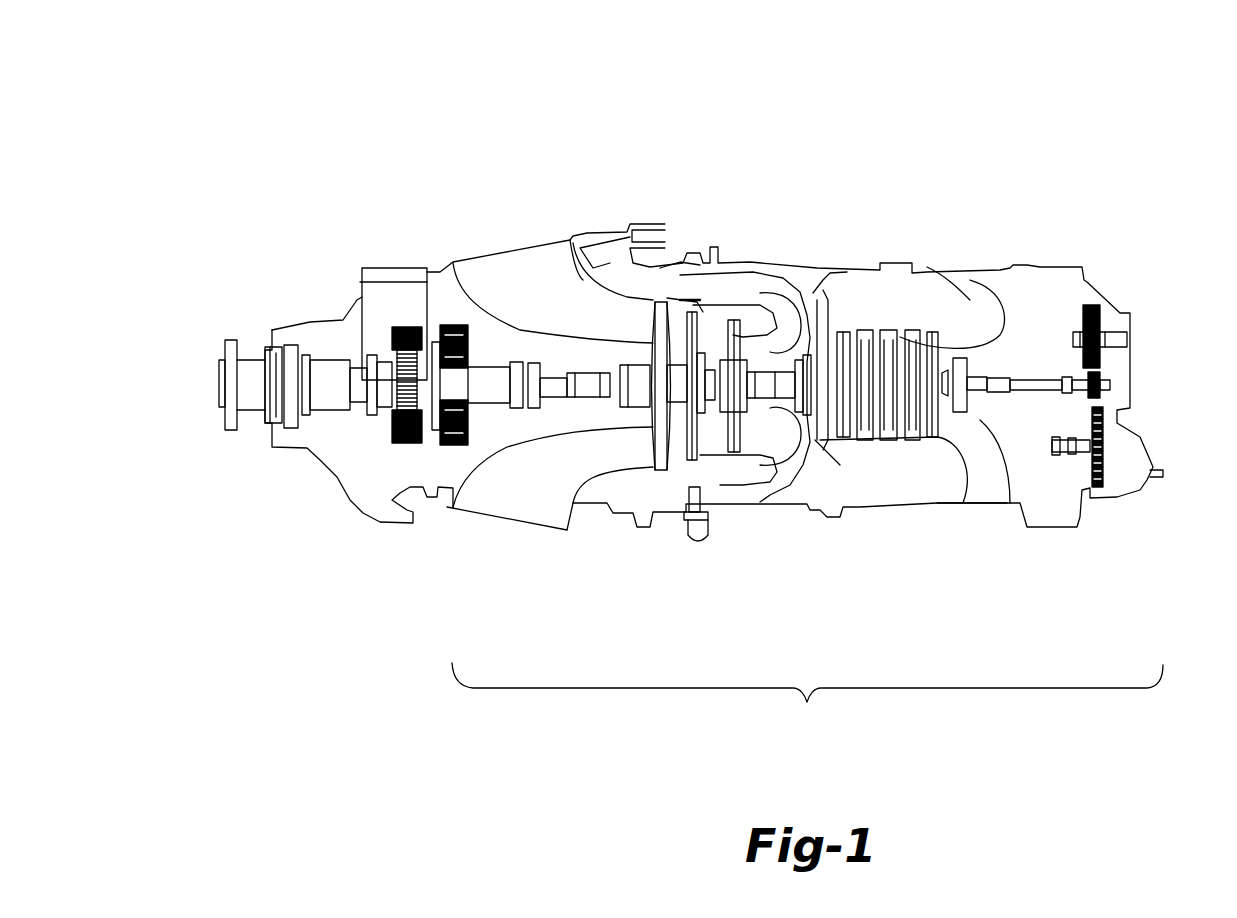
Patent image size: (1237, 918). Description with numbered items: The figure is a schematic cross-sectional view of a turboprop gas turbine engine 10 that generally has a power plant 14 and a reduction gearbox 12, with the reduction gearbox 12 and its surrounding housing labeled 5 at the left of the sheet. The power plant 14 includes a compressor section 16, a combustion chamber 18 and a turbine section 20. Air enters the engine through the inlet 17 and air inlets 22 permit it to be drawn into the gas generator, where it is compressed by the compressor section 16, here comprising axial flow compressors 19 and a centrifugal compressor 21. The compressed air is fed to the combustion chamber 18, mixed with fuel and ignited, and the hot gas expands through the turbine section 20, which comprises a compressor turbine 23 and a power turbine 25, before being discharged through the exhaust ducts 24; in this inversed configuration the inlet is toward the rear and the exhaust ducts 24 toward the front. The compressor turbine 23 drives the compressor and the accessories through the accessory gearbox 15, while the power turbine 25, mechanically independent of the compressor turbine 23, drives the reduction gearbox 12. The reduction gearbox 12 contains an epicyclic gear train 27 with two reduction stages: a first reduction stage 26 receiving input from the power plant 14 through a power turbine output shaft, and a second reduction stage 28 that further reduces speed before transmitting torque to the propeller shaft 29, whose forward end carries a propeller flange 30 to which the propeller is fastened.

The turboprop gas turbine engine 10 is at (1132, 246).
The reduction gearbox 12 is at (347, 500).
The power plant 14 is at (807, 704).
The accessory gearbox 15 is at (1127, 480).
The compressor section 16 is at (856, 278).
The inlet 17 is at (985, 483).
The combustion chamber 18 is at (757, 300).
The axial flow compressors 19 is at (857, 337).
The turbine section 20 is at (713, 328).
The centrifugal compressor 21 is at (805, 300).
The air inlets 22 is at (987, 298).
The compressor turbine 23 is at (737, 320).
The exhaust ducts 24 is at (513, 490).
The power turbine 25 is at (692, 313).
The first reduction stage 26 is at (447, 323).
The epicyclic gear train 27 is at (403, 327).
The second reduction stage 28 is at (413, 292).
The propeller shaft 29 is at (272, 360).
The propeller flange 30 is at (232, 380).
The reduction gearbox 5 is at (360, 282).